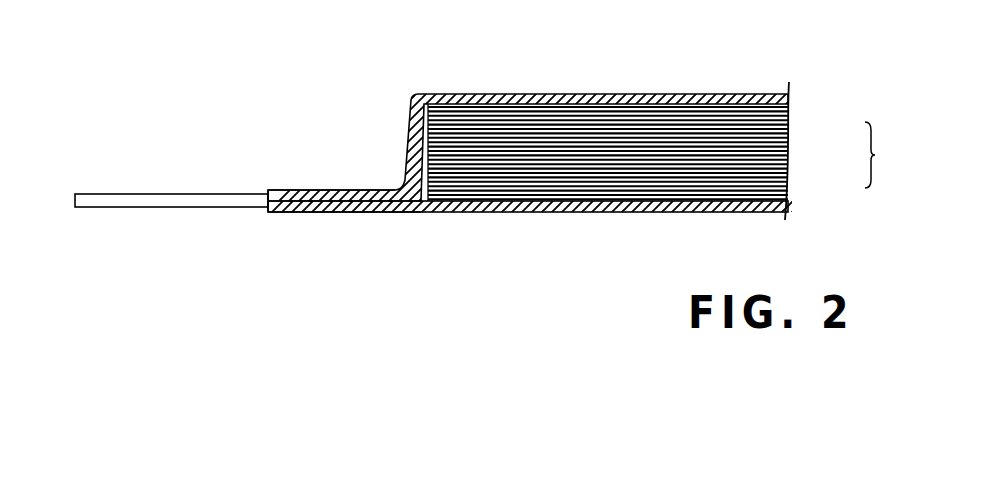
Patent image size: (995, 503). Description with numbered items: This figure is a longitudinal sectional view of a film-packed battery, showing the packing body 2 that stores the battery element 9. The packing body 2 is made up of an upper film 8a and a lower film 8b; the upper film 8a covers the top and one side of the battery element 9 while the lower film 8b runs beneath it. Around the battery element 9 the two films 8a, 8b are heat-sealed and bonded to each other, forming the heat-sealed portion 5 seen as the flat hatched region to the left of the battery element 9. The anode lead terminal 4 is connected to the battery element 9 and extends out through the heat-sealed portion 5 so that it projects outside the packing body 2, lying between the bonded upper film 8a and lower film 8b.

The packing body 2 is at (880, 155).
The anode lead terminal 4 is at (180, 197).
The heat-sealed portion 5 is at (343, 209).
The upper film 8a is at (790, 99).
The lower film 8b is at (790, 203).
The battery element 9 is at (588, 128).